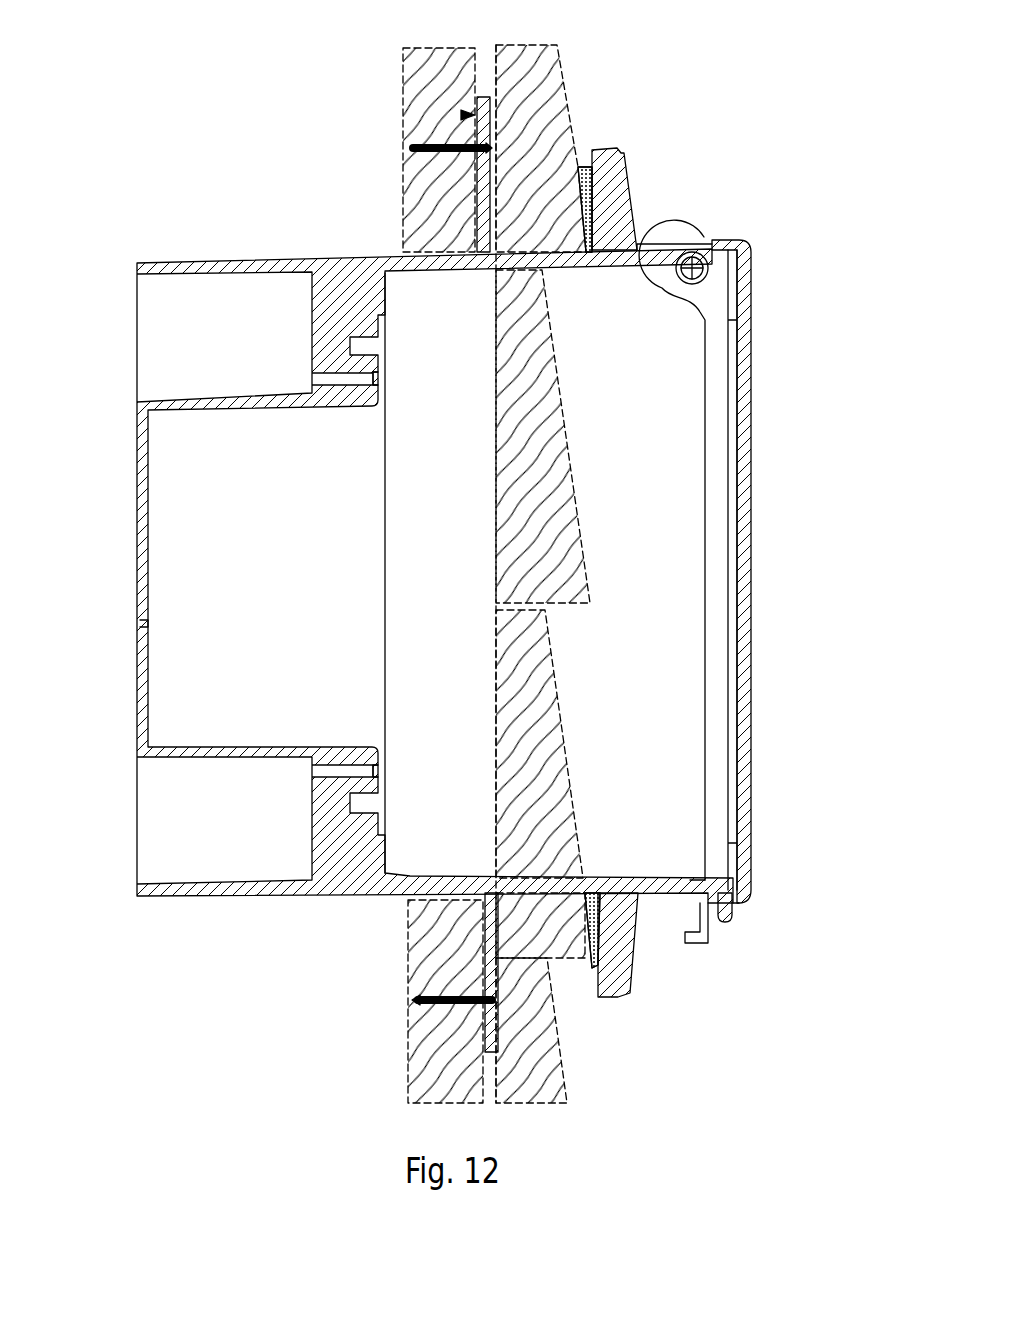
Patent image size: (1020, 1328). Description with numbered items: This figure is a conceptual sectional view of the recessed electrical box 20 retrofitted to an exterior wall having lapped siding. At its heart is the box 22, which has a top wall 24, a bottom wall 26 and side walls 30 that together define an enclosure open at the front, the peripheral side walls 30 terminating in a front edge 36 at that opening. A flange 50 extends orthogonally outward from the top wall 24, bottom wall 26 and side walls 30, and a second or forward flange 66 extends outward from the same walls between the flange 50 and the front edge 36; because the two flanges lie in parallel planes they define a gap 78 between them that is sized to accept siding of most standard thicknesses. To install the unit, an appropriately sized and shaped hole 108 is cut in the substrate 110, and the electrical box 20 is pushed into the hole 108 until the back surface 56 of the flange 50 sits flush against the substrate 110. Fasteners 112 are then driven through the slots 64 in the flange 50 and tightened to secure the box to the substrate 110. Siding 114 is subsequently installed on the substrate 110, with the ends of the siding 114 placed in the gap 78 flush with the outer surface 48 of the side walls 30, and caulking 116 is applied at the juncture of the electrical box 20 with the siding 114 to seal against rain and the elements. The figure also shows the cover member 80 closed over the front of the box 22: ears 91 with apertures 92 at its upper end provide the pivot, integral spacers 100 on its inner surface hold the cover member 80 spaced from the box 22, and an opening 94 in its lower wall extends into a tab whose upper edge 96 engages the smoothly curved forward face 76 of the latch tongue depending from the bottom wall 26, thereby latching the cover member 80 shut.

The recessed electrical box 20 is at (210, 240).
The box 22 is at (137, 470).
The top wall 24 is at (447, 272).
The bottom wall 26 is at (455, 880).
The side walls 30 is at (467, 524).
The front edge 36 is at (737, 748).
The outer surface 48 is at (655, 893).
The flange 50 is at (493, 100).
The back surface 56 is at (462, 116).
The slots 64 is at (492, 127).
The second flange 66 is at (632, 165).
The forward face 76 is at (742, 905).
The gap 78 is at (560, 968).
The cover member 80 is at (752, 567).
The ears 91 is at (652, 272).
The apertures 92 is at (683, 272).
The opening 94 is at (690, 882).
The upper edge 96 is at (725, 922).
The integral spacers 100 is at (738, 345).
The hole 108 is at (398, 247).
The substrate 110 is at (420, 89).
The fasteners 112 is at (492, 148).
The siding 114 is at (558, 472).
The caulking 116 is at (591, 160).